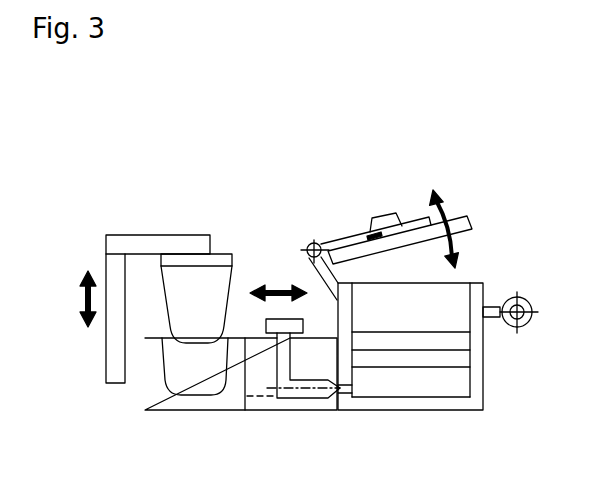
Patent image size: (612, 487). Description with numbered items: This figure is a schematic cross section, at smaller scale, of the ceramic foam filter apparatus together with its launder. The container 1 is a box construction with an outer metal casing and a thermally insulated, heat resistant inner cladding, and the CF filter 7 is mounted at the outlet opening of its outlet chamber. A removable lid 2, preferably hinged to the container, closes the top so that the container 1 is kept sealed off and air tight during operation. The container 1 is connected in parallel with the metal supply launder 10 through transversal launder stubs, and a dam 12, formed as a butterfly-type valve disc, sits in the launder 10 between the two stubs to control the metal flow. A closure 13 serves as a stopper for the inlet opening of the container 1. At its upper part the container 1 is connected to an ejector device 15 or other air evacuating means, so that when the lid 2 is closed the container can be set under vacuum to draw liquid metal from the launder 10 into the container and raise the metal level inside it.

The container 1 is at (487, 393).
The removable lid 2 is at (352, 219).
The CF filter 7 is at (472, 361).
The metal supply launder 10 is at (148, 400).
The dam 12 is at (171, 330).
The closure 13 is at (276, 307).
The ejector device 15 is at (537, 287).